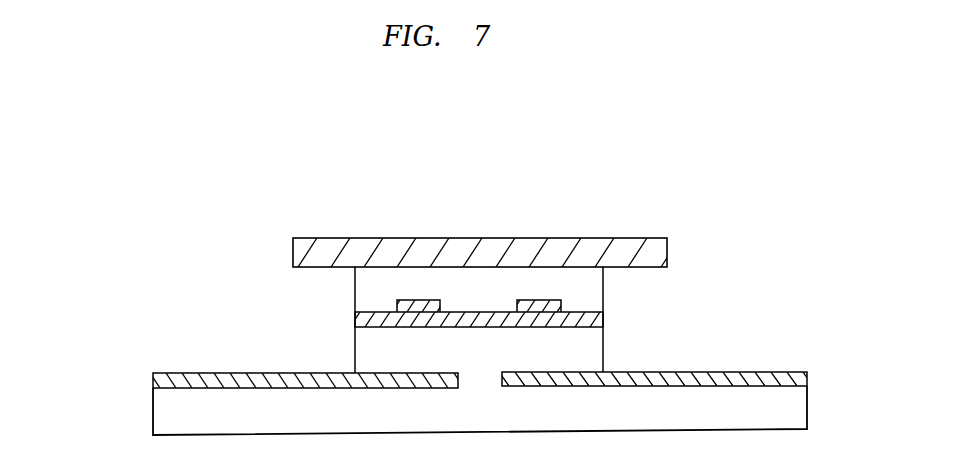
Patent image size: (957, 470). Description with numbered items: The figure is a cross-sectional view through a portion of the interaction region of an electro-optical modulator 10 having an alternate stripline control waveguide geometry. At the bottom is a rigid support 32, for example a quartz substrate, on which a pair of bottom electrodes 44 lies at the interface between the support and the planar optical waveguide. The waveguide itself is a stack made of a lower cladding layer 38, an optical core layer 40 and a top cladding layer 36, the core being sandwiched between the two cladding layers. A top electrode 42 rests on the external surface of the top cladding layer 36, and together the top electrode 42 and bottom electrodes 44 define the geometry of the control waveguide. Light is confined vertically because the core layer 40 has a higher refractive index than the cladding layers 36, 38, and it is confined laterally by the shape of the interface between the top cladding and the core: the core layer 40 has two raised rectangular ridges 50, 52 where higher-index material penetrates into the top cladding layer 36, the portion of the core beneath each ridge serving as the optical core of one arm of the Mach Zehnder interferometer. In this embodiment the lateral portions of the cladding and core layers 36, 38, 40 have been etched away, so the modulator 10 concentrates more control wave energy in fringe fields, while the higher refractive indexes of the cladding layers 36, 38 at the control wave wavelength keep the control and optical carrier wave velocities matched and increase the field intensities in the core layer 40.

The electro-optical modulator 10 is at (104, 162).
The rigid support 32 is at (152, 427).
The top cladding layer 36 is at (355, 284).
The lower cladding layer 38 is at (607, 342).
The optical core layer 40 is at (355, 327).
The top electrode 42 is at (548, 238).
The bottom electrodes 44 is at (152, 385).
The raised rectangular ridge 50 is at (443, 301).
The raised rectangular ridge 52 is at (565, 300).